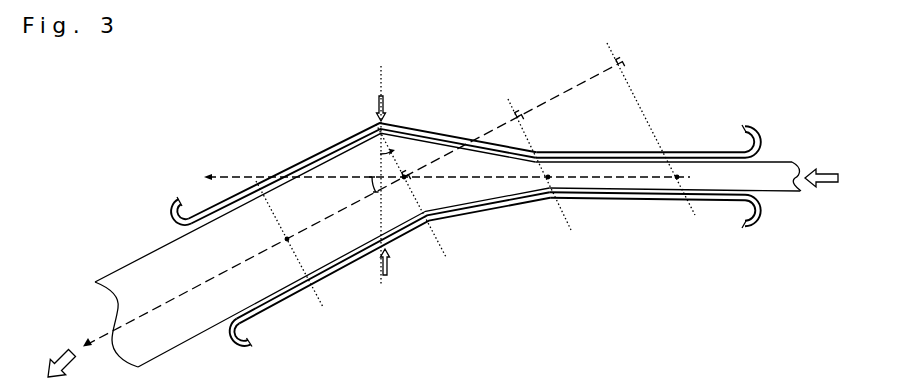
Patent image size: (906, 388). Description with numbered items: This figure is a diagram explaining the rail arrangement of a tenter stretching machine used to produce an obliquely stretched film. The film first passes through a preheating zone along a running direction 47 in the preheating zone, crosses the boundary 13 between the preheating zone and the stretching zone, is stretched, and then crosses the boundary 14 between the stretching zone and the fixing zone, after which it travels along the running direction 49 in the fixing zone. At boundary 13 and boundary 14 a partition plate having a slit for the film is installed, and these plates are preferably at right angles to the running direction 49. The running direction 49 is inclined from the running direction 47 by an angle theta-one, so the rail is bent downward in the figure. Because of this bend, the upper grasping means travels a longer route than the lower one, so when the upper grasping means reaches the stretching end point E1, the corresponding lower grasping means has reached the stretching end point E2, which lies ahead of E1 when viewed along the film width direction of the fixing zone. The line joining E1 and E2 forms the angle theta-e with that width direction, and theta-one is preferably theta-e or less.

The boundary between preheating zone and stretching zone 13 is at (572, 215).
The boundary between stretching zone and fixing zone 14 is at (444, 252).
The running direction of film in preheating zone 47 is at (237, 170).
The running direction of film in fixing zone 49 is at (104, 328).
The stretching end point E1 is at (384, 119).
The stretching end point E2 is at (382, 264).